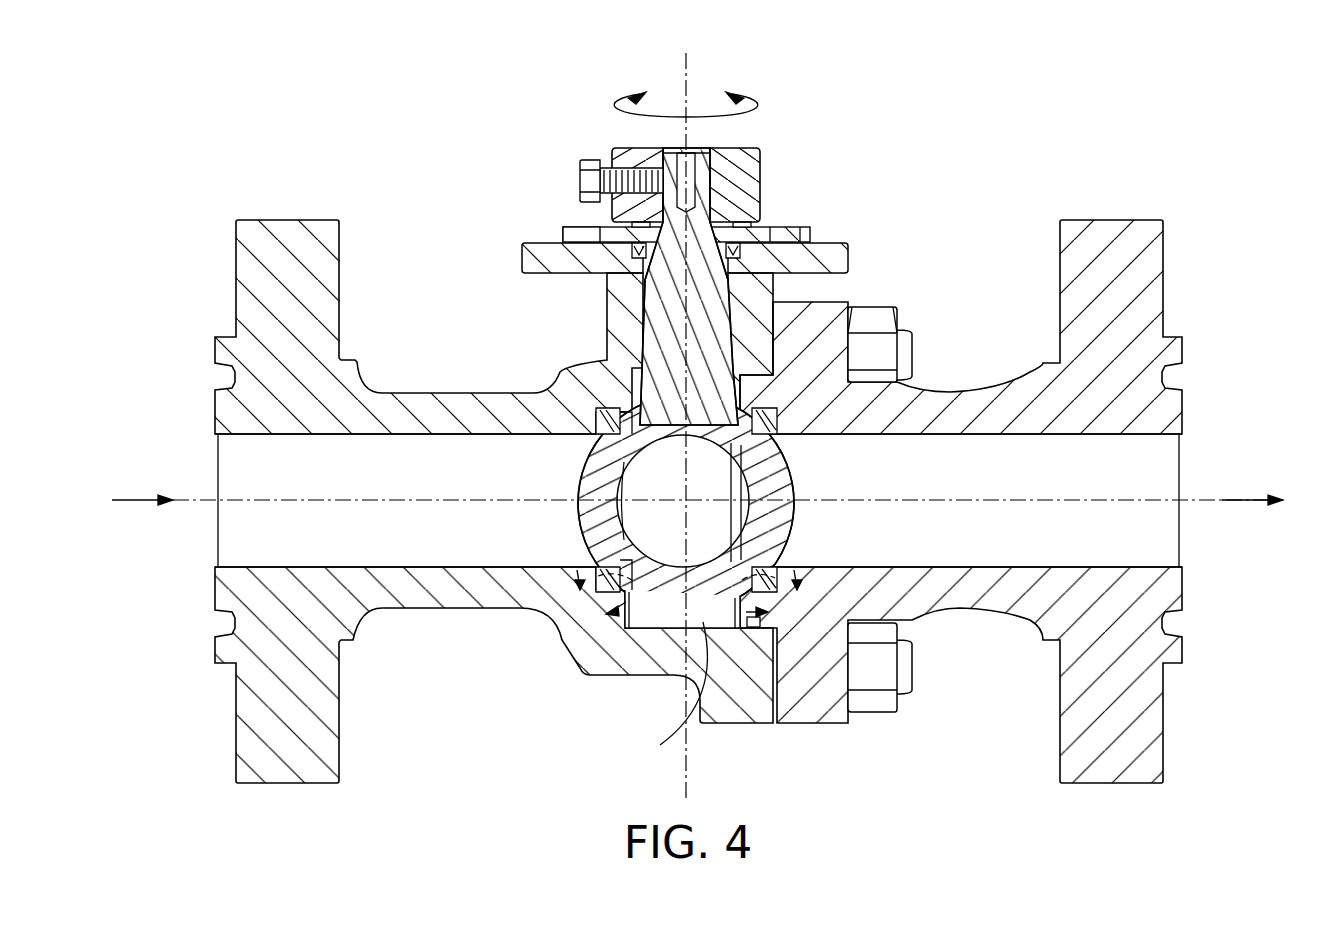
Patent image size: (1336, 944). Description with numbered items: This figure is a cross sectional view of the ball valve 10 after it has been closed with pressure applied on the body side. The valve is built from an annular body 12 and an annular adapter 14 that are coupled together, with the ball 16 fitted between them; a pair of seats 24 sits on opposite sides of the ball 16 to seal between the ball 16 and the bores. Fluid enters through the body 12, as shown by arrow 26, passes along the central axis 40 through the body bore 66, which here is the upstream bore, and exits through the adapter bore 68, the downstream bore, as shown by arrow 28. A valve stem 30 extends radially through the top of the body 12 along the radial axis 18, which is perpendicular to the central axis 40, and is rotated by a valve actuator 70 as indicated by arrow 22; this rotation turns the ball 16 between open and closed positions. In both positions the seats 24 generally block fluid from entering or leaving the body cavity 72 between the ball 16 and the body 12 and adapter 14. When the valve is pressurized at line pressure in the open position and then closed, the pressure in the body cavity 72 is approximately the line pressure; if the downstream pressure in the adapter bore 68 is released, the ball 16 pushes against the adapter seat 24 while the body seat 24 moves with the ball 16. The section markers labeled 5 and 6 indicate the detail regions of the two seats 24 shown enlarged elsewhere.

The ball valve 10 is at (697, 426).
The annular body 12 is at (418, 292).
The annular adapter 14 is at (982, 298).
The ball 16 is at (778, 541).
The radial axis 18 is at (686, 72).
The arrow indicating rotation 22 is at (753, 112).
The seat 24 is at (623, 592).
The arrow indicating fluid entry 26 is at (148, 500).
The arrow indicating fluid exit 28 is at (1262, 500).
The valve stem 30 is at (708, 310).
The central axis 40 is at (316, 497).
The body bore 66 is at (398, 523).
The adapter bore 68 is at (979, 500).
The valve actuator 70 is at (632, 150).
The body cavity 72 is at (650, 615).
The section line for FIG. 5 is at (596, 607).
The section line for FIG. 6 is at (776, 601).